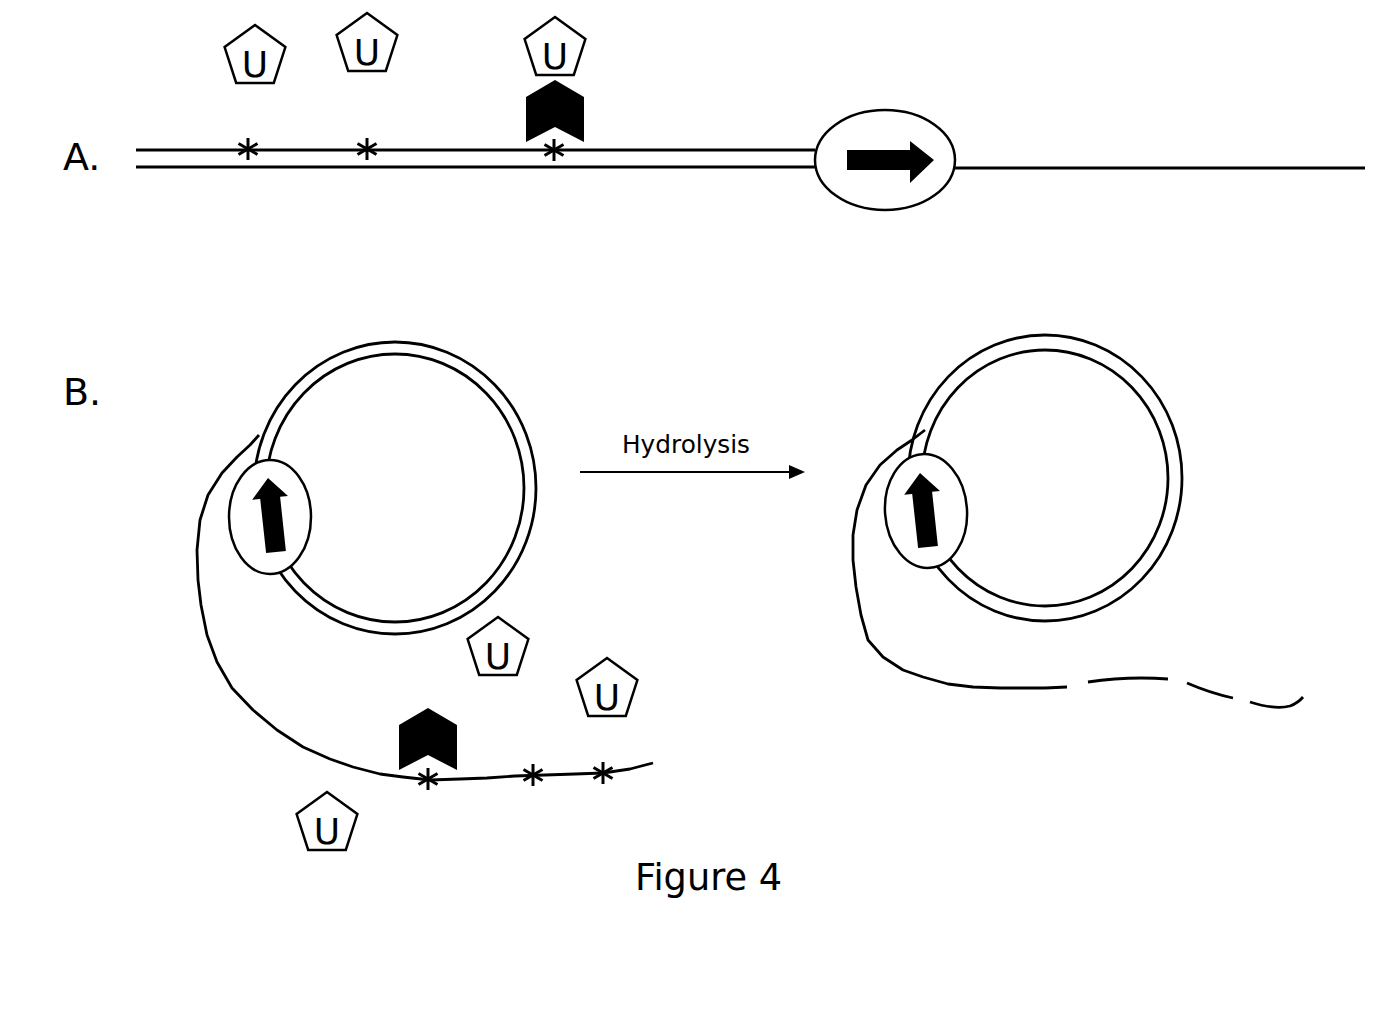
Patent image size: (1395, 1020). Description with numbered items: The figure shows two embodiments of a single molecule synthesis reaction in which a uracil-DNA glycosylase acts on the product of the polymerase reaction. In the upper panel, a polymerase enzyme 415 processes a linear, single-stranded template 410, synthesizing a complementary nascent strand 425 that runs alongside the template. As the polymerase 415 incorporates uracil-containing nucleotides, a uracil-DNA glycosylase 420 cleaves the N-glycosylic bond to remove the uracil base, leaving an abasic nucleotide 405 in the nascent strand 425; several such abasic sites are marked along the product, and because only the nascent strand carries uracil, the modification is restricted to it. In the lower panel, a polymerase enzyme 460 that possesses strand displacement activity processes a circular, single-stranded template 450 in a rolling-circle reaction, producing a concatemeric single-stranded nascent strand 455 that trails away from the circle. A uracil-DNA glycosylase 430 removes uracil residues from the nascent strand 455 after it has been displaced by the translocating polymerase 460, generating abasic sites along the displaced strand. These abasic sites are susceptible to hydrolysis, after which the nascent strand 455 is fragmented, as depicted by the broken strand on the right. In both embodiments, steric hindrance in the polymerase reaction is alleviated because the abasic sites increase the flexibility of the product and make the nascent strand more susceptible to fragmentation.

The abasic nucleotide 405 is at (243, 169).
The linear single-stranded template 410 is at (1284, 168).
The polymerase enzyme 415 is at (837, 132).
The uracil-DNA glycosylase 420 is at (528, 127).
The complementary nascent strand 425 is at (649, 150).
The uracil-DNA glycosylase 430 is at (458, 748).
The circular single-stranded template 450 is at (379, 617).
The concatemeric single-stranded nascent strand 455 is at (198, 592).
The polymerase enzyme 460 is at (300, 505).